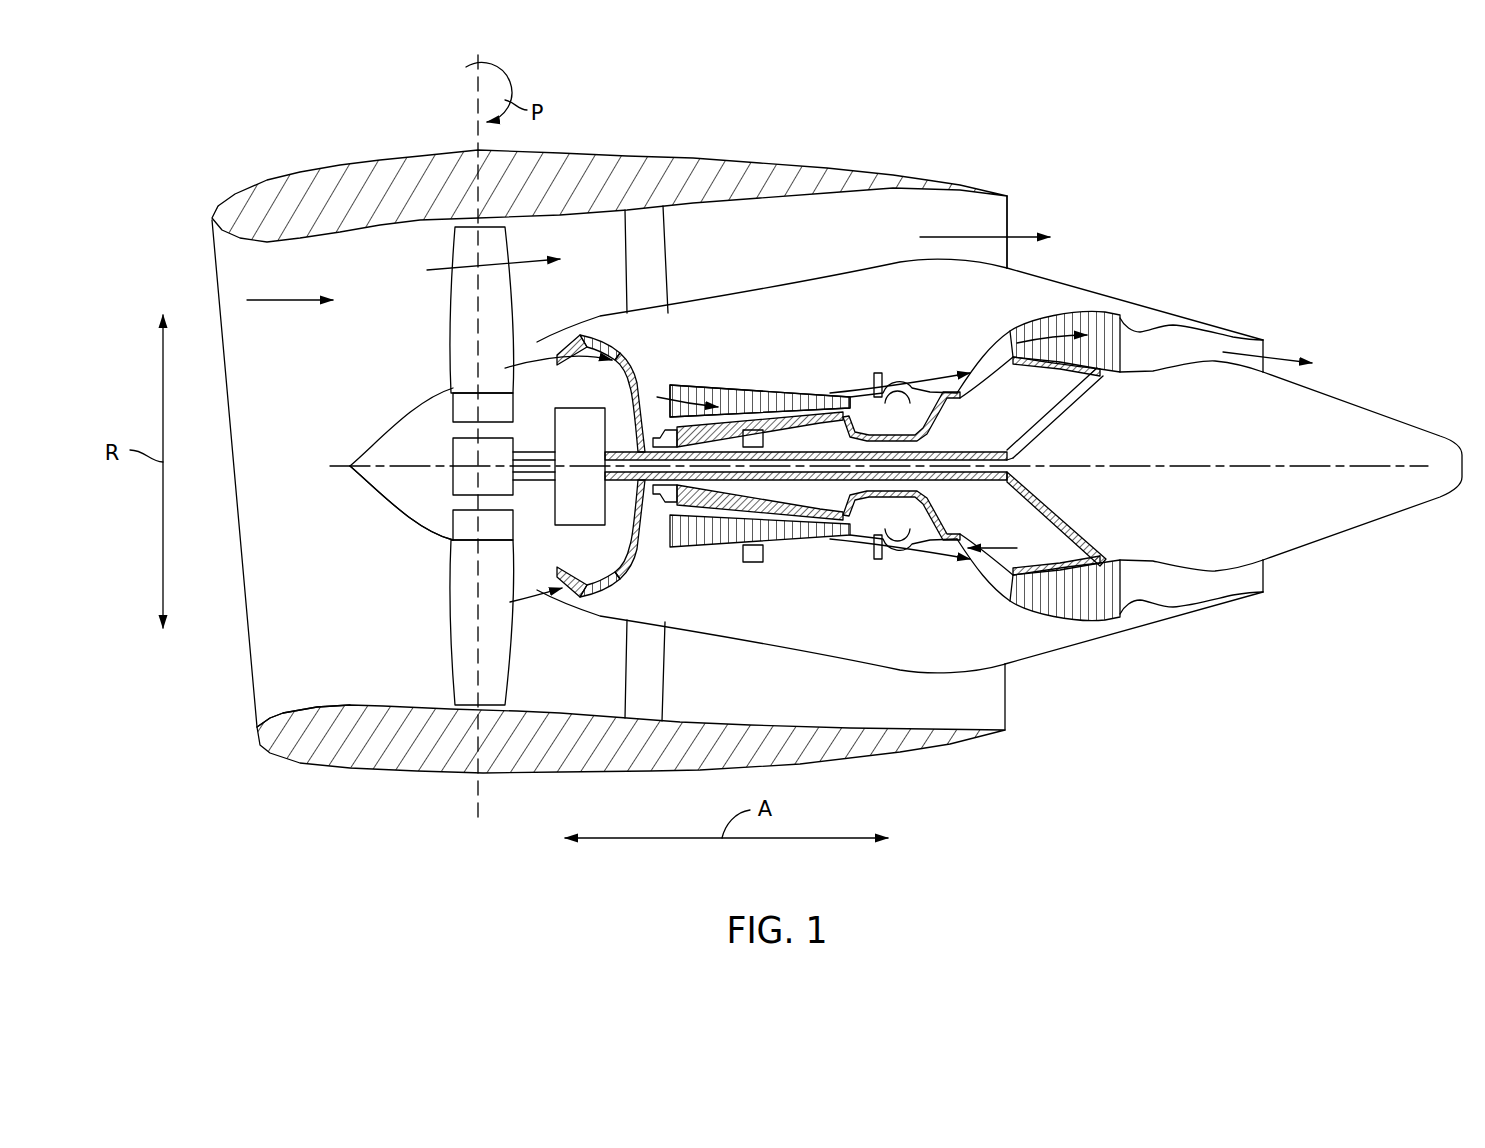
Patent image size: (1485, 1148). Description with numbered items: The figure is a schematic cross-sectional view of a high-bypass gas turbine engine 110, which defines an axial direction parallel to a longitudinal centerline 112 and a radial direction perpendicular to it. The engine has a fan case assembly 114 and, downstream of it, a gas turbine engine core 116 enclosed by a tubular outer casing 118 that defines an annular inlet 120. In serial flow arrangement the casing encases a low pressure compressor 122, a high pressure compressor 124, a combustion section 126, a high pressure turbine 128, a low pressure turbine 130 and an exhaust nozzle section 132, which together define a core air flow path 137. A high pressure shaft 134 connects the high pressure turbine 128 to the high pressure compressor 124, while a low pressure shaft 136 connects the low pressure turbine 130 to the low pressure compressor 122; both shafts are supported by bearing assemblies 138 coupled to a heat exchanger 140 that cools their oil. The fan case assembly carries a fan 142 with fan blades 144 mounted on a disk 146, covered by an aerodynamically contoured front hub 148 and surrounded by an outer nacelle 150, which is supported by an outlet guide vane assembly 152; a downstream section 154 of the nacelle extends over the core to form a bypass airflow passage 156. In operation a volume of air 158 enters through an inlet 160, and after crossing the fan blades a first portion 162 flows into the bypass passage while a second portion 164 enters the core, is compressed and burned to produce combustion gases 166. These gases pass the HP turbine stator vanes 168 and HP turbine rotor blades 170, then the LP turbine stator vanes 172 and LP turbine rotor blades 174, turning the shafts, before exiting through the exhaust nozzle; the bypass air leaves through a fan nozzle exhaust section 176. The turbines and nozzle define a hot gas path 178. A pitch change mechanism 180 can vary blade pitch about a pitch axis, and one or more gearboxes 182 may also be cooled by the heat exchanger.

The gas turbine engine 110 is at (1168, 180).
The longitudinal centerline 112 is at (1210, 465).
The fan case assembly 114 is at (355, 252).
The gas turbine engine core 116 is at (750, 360).
The outer casing 118 is at (770, 640).
The annular inlet 120 is at (553, 578).
The low pressure compressor 122 is at (612, 590).
The high pressure compressor 124 is at (707, 543).
The combustion section 126 is at (898, 548).
The high pressure turbine 128 is at (1017, 548).
The low pressure turbine 130 is at (1106, 609).
The exhaust nozzle section 132 is at (1177, 593).
The high pressure shaft 134 is at (882, 400).
The low pressure shaft 136 is at (970, 443).
The core air flow path 137 is at (662, 548).
The bearing assemblies 138 is at (765, 445).
The heat exchanger 140 is at (764, 554).
The fan 142 is at (397, 518).
The fan blades 144 is at (452, 645).
The disk 146 is at (462, 410).
The front hub 148 is at (362, 478).
The outer nacelle 150 is at (433, 771).
The outlet guide vane assembly 152 is at (668, 262).
The downstream section 154 is at (893, 185).
The bypass airflow passage 156 is at (829, 248).
The air 158 is at (285, 301).
The inlet 160 is at (258, 708).
The first portion of air 162 is at (465, 265).
The second portion of air 164 is at (537, 343).
The combustion gases 166 is at (945, 377).
The HP turbine stator vanes 168 is at (922, 542).
The HP turbine rotor blades 170 is at (940, 518).
The LP turbine stator vanes 172 is at (1013, 603).
The LP turbine rotor blades 174 is at (1028, 603).
The fan nozzle exhaust section 176 is at (995, 212).
The hot gas path 178 is at (993, 340).
The pitch change mechanism 180 is at (453, 448).
The gearboxes 182 is at (580, 408).